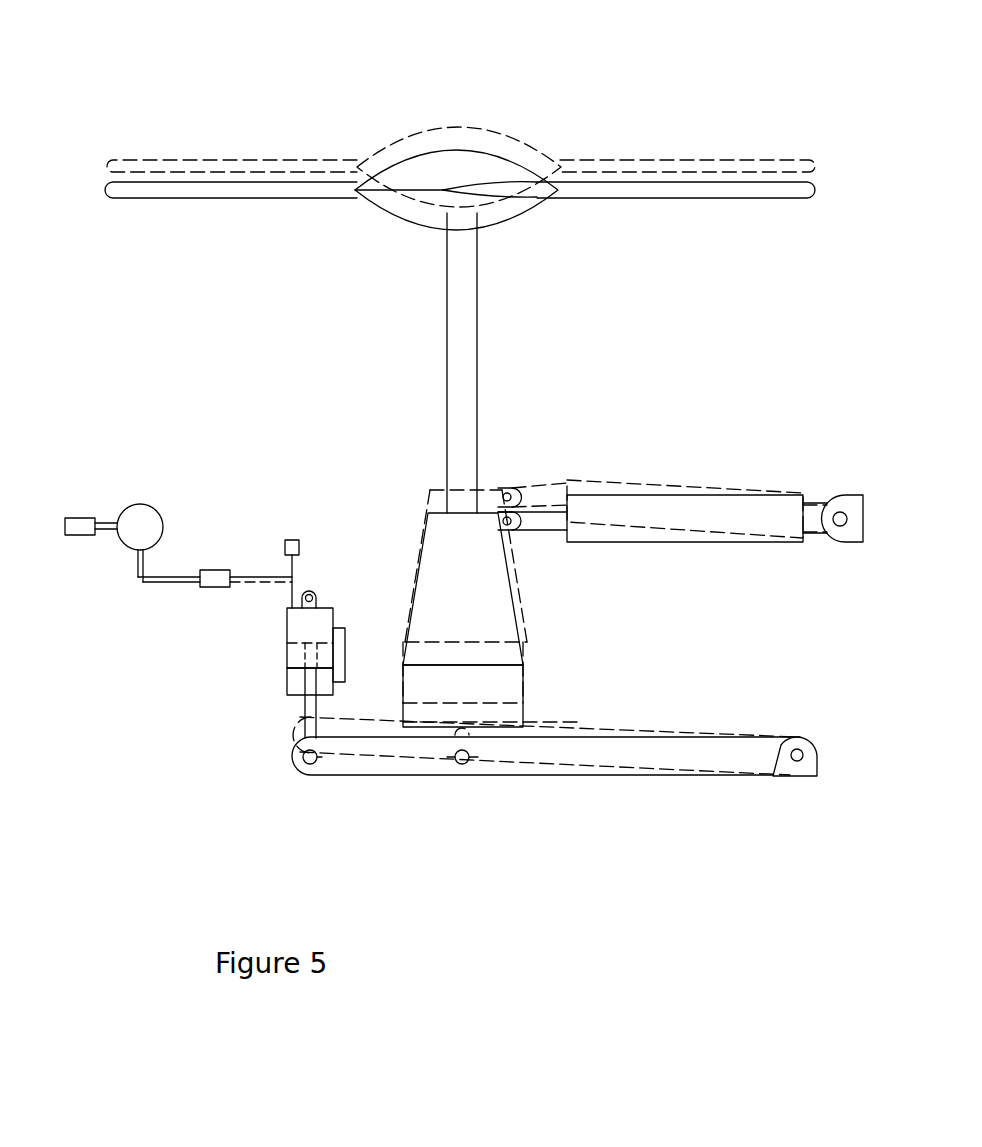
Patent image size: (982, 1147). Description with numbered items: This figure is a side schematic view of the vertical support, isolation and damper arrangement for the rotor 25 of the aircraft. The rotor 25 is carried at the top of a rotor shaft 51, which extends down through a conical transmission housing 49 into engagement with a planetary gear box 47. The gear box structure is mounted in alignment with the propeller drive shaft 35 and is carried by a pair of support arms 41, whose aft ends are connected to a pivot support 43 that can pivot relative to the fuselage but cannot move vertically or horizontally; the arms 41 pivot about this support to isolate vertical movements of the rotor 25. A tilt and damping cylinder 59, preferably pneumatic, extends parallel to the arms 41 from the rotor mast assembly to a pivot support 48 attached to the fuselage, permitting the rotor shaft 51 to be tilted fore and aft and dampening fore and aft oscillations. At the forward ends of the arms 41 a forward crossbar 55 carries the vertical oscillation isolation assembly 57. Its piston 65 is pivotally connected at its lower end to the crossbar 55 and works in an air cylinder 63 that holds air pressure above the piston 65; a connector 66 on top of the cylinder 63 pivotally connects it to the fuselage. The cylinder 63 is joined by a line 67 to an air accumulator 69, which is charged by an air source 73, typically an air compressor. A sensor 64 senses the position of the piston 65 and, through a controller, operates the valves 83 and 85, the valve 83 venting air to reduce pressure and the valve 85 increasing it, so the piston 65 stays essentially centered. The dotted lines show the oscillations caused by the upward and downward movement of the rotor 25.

The rotor 25 is at (538, 128).
The rotor shaft 51 is at (447, 333).
The planetary gear box 47 is at (410, 682).
The conical transmission housing 49 is at (415, 568).
The tilt and damping cylinder 59 is at (707, 497).
The tilt cylinder pivot support 48 is at (847, 496).
The support arms 41 is at (632, 760).
The pivot support 43 is at (805, 740).
The propeller drive shaft 35 is at (457, 765).
The forward crossbar 55 is at (304, 762).
The vertical oscillation isolation assembly 57 is at (185, 652).
The piston 65 is at (287, 668).
The air cylinder 63 is at (287, 695).
The connector 66 is at (310, 593).
The sensor 64 is at (345, 667).
The air source 73 is at (79, 518).
The air accumulator 69 is at (137, 504).
The line 67 is at (252, 577).
The valve 85 is at (207, 570).
The valve 83 is at (293, 540).